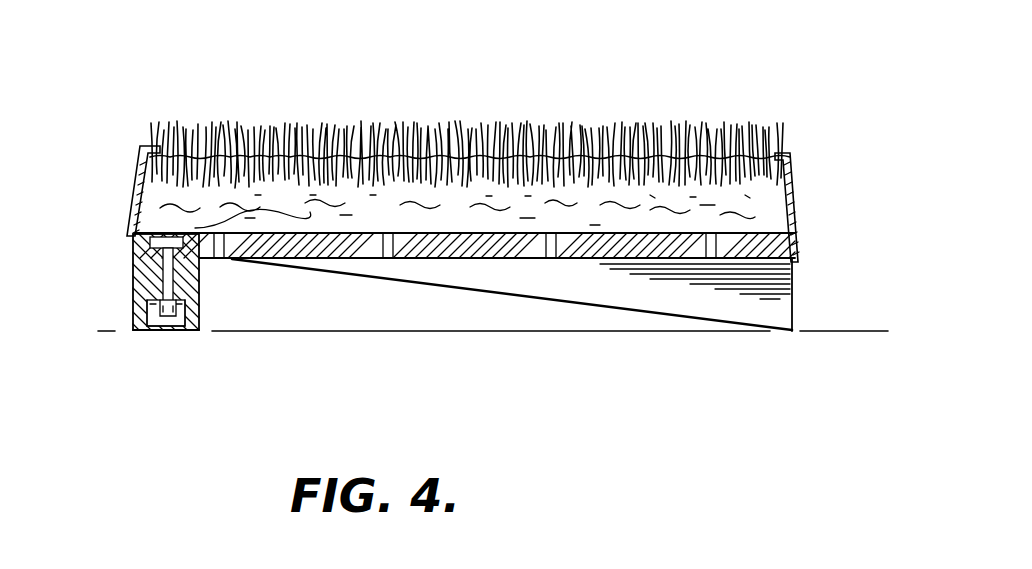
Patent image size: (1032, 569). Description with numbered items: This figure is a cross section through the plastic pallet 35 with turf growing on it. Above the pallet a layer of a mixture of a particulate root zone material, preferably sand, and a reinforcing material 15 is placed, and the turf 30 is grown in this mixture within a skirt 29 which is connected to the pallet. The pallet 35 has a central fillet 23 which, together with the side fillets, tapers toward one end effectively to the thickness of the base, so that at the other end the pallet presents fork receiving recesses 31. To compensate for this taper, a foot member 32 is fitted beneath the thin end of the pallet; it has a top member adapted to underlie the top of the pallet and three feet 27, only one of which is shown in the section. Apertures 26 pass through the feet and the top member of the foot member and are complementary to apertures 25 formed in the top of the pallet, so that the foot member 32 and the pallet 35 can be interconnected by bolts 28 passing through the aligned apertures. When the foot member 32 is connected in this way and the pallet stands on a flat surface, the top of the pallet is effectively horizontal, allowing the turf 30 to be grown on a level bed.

The reinforcing material 15 is at (470, 195).
The turf 30 is at (545, 125).
The skirt 29 is at (797, 186).
The apertures 25 is at (136, 243).
The plastic pallet 35 is at (600, 333).
The apertures 26 is at (133, 291).
The bolts 28 is at (133, 271).
The foot member 32 is at (186, 338).
The central fillet 23 is at (694, 303).
The fork receiving recesses 31 is at (797, 300).
The feet 27 is at (493, 363).